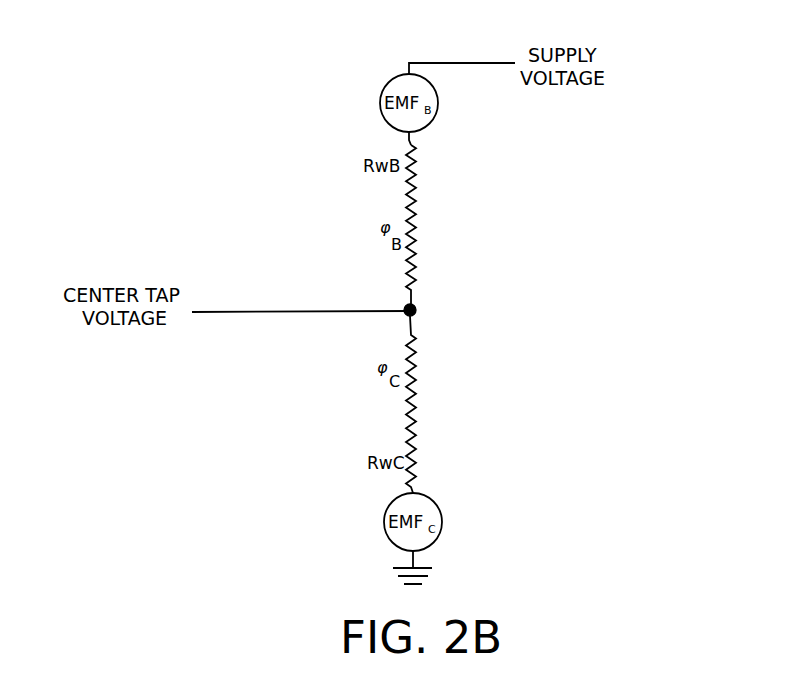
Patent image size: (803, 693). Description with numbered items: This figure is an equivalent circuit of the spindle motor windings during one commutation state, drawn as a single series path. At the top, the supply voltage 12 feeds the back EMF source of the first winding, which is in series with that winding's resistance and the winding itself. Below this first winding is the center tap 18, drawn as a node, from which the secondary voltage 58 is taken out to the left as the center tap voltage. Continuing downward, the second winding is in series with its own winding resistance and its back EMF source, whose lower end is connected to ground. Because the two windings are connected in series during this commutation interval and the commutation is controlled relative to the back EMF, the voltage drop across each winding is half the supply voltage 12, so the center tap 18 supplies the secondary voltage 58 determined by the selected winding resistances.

The supply voltage 12 is at (459, 62).
The center tap 18 is at (428, 314).
The secondary voltage 58 is at (276, 311).